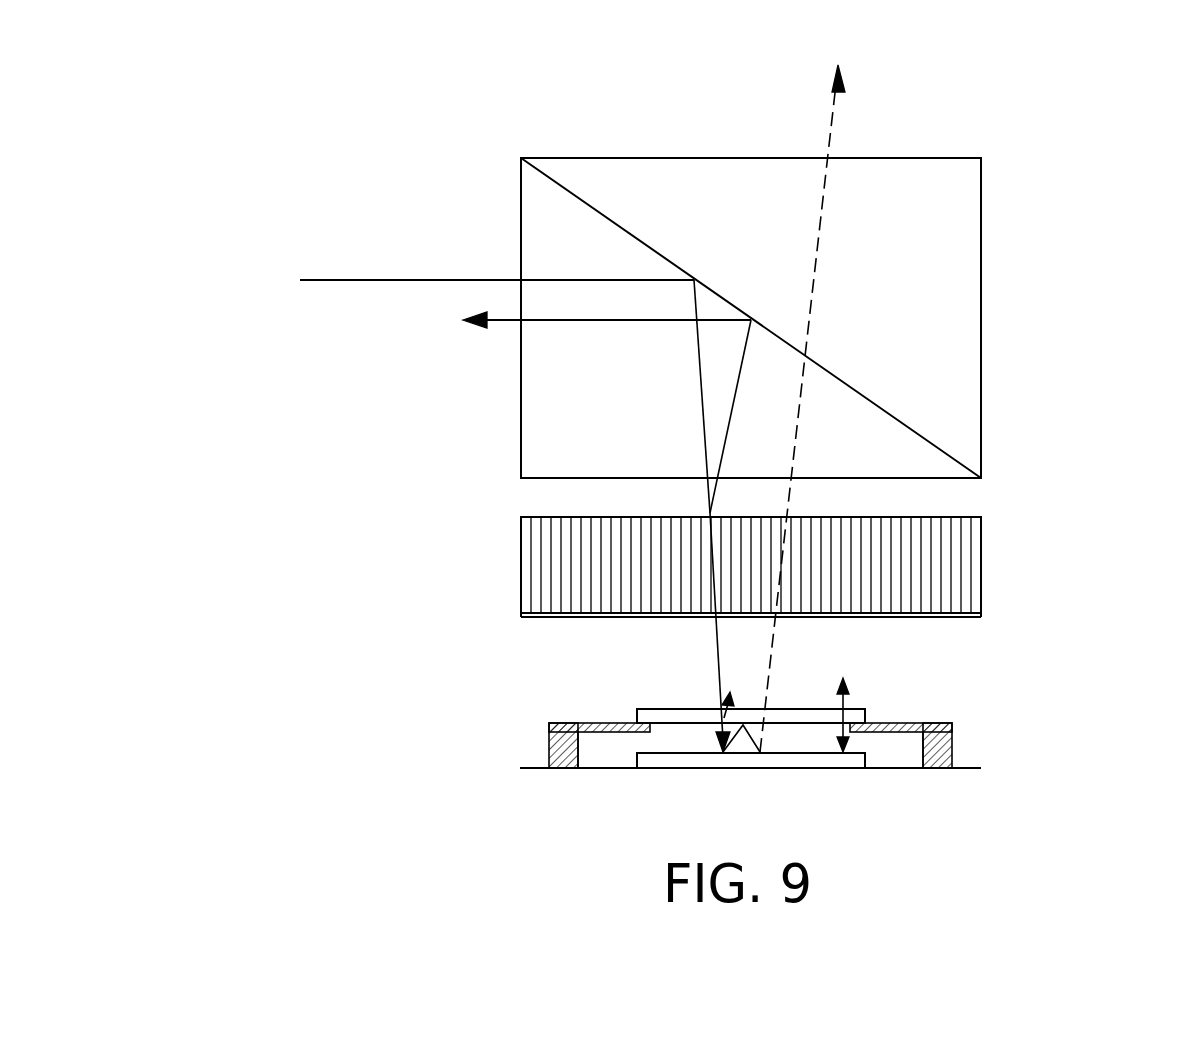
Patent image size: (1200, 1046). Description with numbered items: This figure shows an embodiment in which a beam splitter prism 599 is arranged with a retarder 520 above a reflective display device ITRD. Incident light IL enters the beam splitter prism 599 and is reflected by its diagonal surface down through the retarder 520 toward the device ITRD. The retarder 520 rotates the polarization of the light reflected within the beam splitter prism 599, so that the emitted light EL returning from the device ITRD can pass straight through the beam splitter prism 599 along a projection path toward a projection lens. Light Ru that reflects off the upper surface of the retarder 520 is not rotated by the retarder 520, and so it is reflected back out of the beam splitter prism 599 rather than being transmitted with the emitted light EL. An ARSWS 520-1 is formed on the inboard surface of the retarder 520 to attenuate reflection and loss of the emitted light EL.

The beam splitter prism 599 is at (695, 203).
The retarder 520 is at (548, 575).
The ARSWS 520-1 is at (887, 618).
The incident light IL is at (505, 378).
The reflected light Ru is at (596, 412).
The emitted light EL is at (825, 399).
The interferometric reflective display / stage ITRD is at (545, 692).